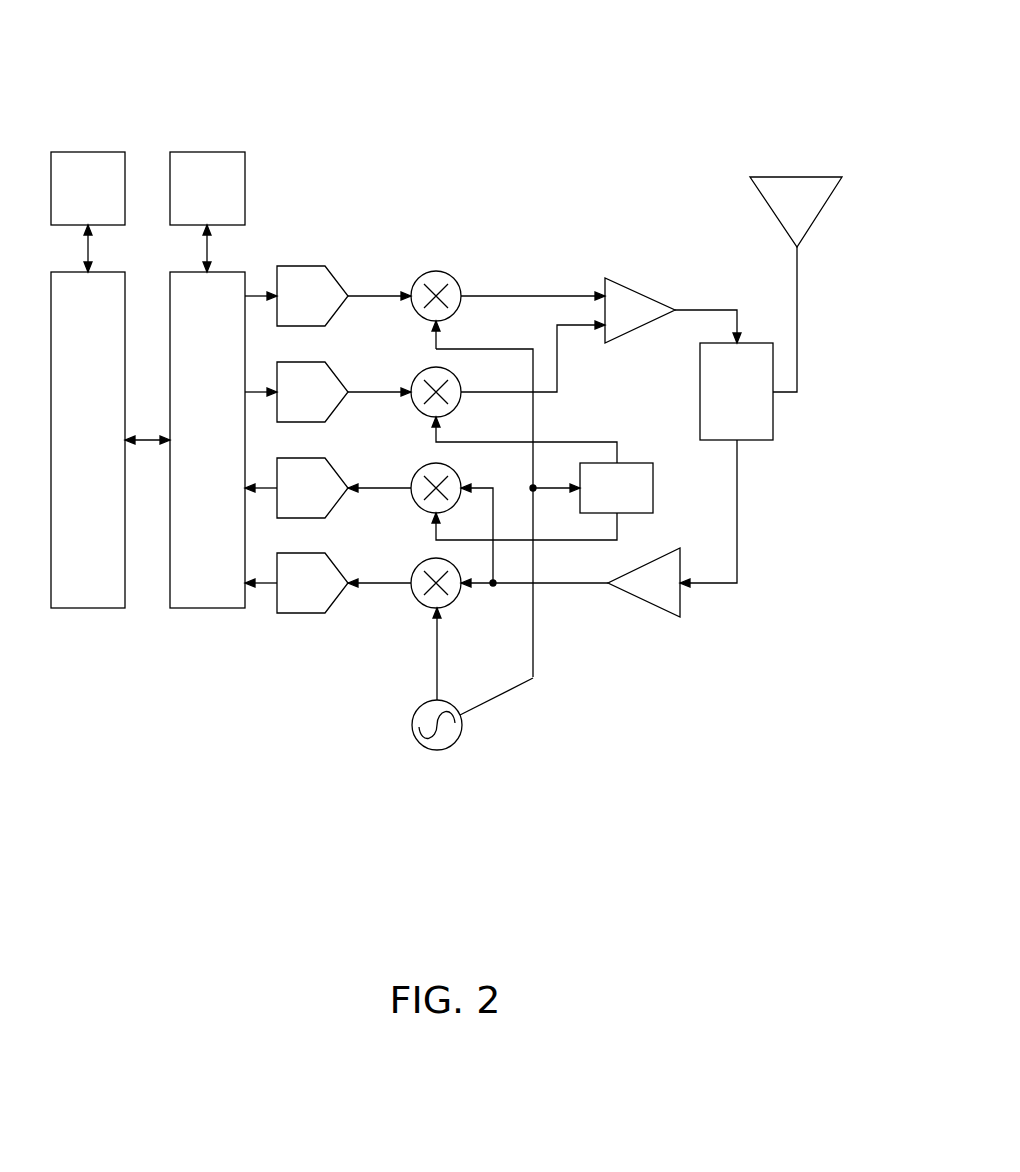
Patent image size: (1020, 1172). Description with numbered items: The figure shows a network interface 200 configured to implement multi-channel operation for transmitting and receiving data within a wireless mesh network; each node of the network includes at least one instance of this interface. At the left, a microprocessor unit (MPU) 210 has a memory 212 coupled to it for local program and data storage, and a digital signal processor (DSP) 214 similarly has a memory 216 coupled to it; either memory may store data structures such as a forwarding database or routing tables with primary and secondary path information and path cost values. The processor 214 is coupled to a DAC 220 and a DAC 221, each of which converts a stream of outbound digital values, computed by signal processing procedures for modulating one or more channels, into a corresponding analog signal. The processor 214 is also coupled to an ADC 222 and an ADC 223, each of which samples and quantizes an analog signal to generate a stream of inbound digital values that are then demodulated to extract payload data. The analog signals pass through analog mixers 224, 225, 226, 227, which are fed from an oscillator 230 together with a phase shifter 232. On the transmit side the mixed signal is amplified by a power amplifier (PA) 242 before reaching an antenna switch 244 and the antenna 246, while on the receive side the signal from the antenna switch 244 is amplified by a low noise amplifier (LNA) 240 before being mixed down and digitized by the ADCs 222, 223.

The network interface 200 is at (592, 108).
The microprocessor unit (MPU) 210 is at (70, 462).
The memory 212 is at (70, 212).
The digital signal processor (DSP) 214 is at (189, 462).
The memory 216 is at (189, 212).
The digital to analog converter (DAC) 220 is at (283, 321).
The digital to analog converter (DAC) 221 is at (283, 417).
The analog to digital converter (ADC) 222 is at (283, 513).
The analog to digital converter (ADC) 223 is at (283, 608).
The analog mixer 224 is at (423, 274).
The analog mixer 225 is at (422, 370).
The analog mixer 226 is at (422, 466).
The analog mixer 227 is at (423, 562).
The oscillator 230 is at (418, 708).
The phase shifter 232 is at (599, 499).
The low noise amplifier (LNA) 240 is at (645, 600).
The power amplifier (PA) 242 is at (625, 282).
The antenna switch 244 is at (719, 403).
The antenna 246 is at (766, 202).